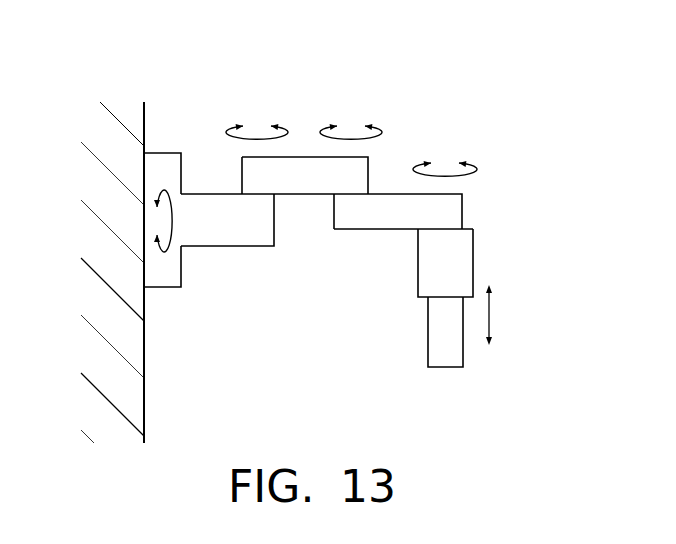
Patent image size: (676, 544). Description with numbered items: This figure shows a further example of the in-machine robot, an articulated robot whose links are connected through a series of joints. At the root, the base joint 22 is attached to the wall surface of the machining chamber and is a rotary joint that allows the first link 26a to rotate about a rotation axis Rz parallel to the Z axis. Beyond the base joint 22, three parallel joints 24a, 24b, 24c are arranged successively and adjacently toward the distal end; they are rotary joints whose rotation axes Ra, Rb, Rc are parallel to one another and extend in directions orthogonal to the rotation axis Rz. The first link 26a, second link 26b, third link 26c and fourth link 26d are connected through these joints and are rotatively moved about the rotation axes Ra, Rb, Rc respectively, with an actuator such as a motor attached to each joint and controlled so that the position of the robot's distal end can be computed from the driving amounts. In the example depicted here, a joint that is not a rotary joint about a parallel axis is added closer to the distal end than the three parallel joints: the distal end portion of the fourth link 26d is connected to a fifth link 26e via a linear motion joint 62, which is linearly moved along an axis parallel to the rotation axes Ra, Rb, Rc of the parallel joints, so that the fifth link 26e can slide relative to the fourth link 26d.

The base joint 22 is at (182, 237).
The parallel joint 24a is at (248, 198).
The parallel joint 24b is at (357, 199).
The parallel joint 24c is at (450, 232).
The first link 26a is at (233, 247).
The second link 26b is at (305, 167).
The third link 26c is at (403, 229).
The fourth link 26d is at (465, 258).
The fifth link 26e is at (435, 346).
The linear motion joint 62 is at (440, 299).
The rotation axis Ra is at (256, 128).
The rotation axis Rb is at (351, 128).
The rotation axis Rc is at (445, 268).
The rotation axis Rz is at (165, 218).